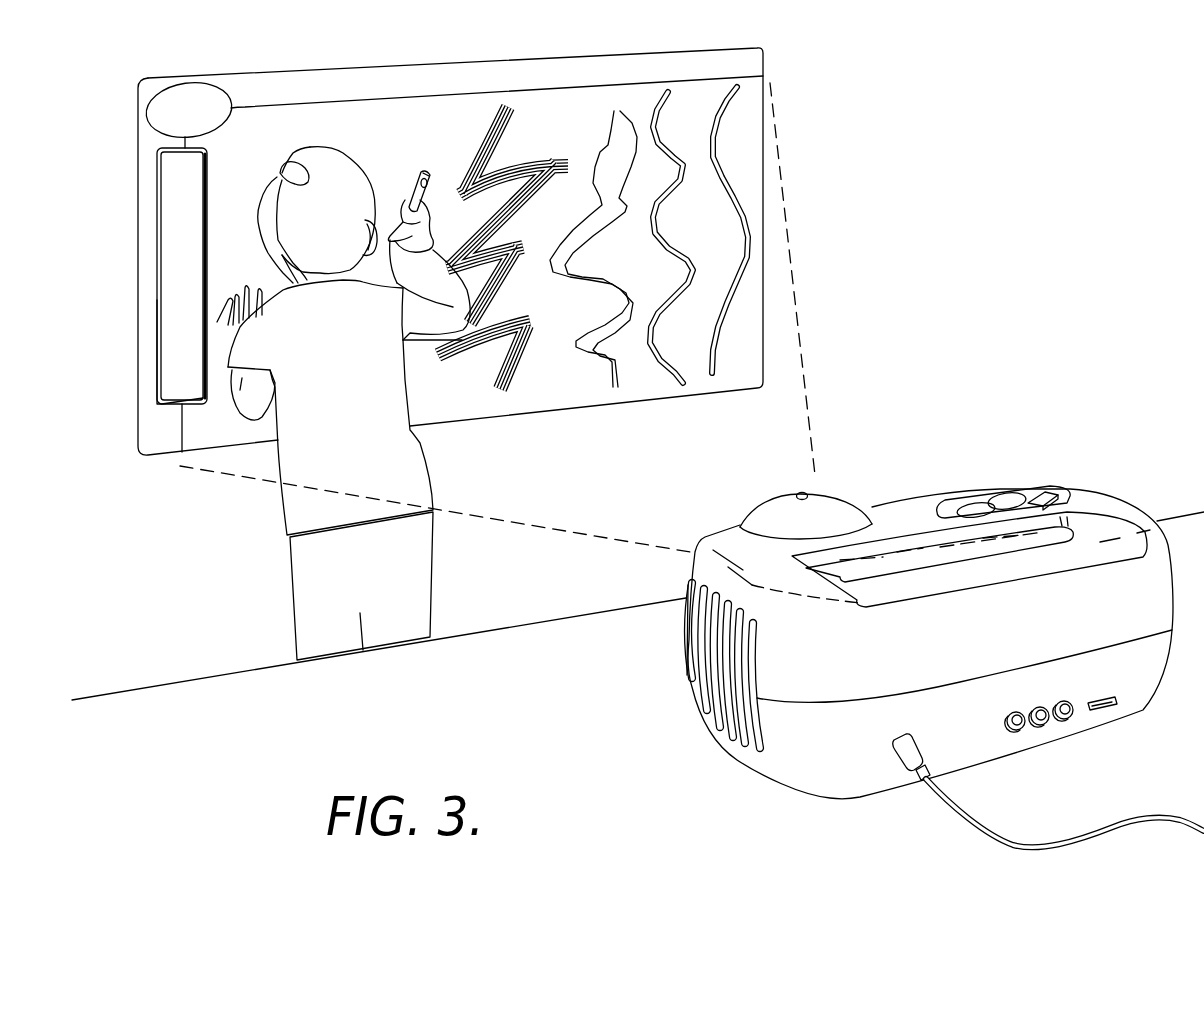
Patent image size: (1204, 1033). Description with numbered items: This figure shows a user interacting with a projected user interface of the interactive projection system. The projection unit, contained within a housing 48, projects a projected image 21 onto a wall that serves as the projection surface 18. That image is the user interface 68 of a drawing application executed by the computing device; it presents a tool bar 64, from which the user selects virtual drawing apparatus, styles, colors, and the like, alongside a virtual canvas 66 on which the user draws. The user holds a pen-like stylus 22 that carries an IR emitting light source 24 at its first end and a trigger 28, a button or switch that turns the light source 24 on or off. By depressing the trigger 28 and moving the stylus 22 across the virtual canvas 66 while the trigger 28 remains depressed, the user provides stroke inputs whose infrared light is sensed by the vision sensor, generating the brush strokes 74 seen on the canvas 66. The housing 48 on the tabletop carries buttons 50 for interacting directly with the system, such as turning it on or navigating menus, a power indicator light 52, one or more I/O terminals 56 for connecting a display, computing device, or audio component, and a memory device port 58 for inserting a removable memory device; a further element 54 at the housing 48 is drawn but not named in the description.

The projection surface 18 is at (456, 392).
The projected image 21 is at (768, 45).
The stylus 22 is at (410, 206).
The IR emitting light source 24 is at (426, 172).
The trigger 28 is at (428, 184).
The housing 48 is at (707, 718).
The buttons 50 is at (1037, 496).
The power indicator light 52 is at (800, 492).
The power cord 54 is at (942, 815).
The I/O terminals 56 is at (1062, 721).
The memory device port 58 is at (1103, 712).
The tool bar 64 is at (156, 251).
The virtual canvas 66 is at (568, 386).
The user interface 68 is at (156, 383).
The brush strokes 74 is at (540, 196).